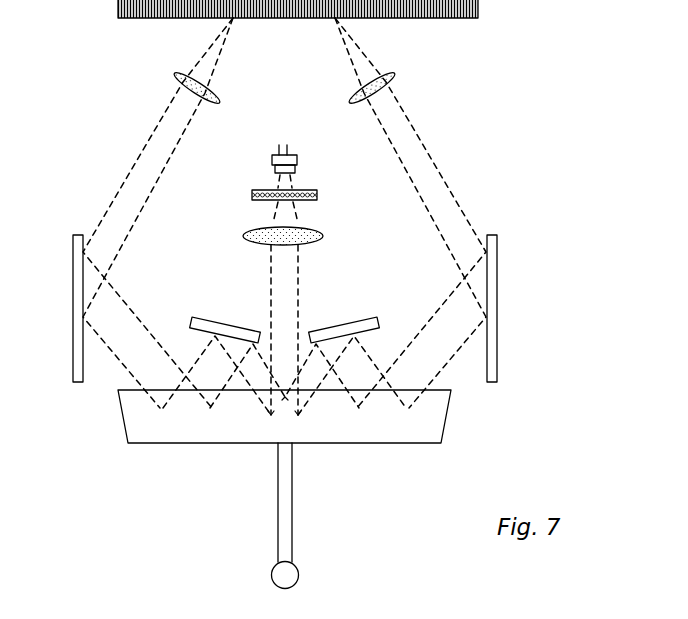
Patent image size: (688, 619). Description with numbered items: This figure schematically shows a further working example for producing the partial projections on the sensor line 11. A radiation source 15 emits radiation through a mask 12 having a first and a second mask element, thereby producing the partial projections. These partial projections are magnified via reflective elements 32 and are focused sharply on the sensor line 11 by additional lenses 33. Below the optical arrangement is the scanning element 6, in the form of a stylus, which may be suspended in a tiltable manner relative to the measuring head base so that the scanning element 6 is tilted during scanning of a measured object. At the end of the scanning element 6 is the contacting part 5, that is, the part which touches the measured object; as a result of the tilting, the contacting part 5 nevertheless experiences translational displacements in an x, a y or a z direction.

The sensor line 11 is at (289, 26).
The additional lenses 33 is at (178, 77).
The radiation source 15 is at (273, 158).
The mask 12 is at (252, 195).
The reflective elements 32 is at (518, 345).
The scanning element 6 is at (332, 498).
The contacting part 5 is at (225, 567).